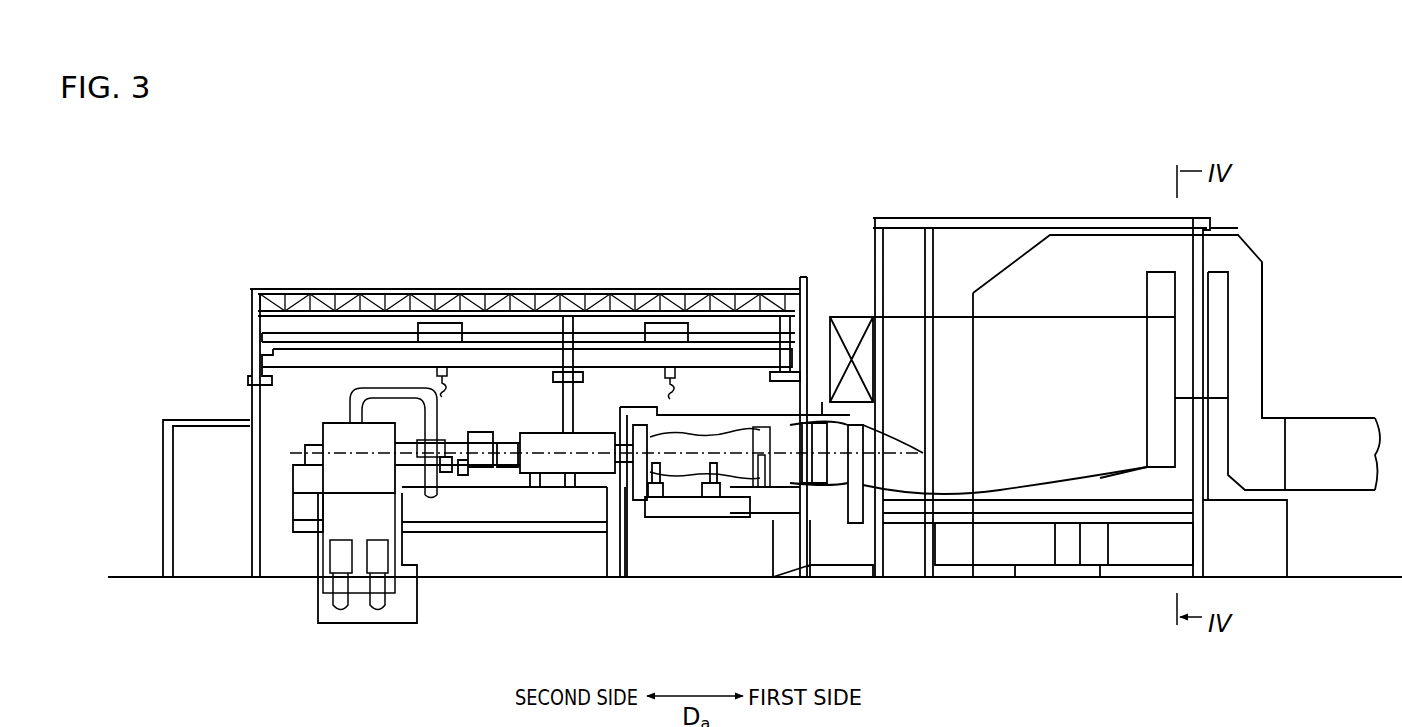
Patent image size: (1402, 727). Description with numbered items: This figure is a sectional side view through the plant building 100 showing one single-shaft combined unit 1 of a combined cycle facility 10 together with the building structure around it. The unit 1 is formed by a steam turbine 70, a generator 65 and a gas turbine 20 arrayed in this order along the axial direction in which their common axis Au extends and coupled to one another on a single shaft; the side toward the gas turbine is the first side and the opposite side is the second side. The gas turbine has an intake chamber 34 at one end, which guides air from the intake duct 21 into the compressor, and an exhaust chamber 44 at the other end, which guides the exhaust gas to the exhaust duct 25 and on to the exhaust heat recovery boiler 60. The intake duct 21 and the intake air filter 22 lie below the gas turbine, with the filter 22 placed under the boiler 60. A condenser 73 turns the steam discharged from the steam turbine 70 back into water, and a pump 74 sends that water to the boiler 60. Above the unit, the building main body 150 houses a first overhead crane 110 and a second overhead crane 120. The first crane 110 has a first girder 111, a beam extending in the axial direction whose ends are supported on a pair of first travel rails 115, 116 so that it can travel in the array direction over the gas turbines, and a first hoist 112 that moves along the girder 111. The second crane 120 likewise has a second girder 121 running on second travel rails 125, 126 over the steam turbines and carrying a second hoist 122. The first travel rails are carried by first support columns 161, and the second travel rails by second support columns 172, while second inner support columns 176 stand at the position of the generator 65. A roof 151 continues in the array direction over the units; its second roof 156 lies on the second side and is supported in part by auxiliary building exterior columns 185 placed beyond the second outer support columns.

The single-shaft combined unit 1 is at (290, 445).
The combined cycle facility 10 is at (1255, 224).
The gas turbine facility 20 is at (685, 486).
The intake duct 21 is at (978, 556).
The intake air filter 22 is at (1088, 558).
The exhaust duct 25 is at (858, 482).
The intake chamber 34 is at (636, 478).
The exhaust chamber 44 is at (748, 462).
The exhaust heat recovery boiler 60 is at (1003, 266).
The generator 65 is at (543, 478).
The steam turbine 70 is at (320, 480).
The condenser 73 is at (333, 530).
The pump 74 is at (338, 630).
The plant building 100 is at (230, 216).
The first overhead crane 110 is at (748, 328).
The first girder 111 is at (704, 355).
The first hoist 112 is at (662, 323).
The first travel rail 115 is at (783, 365).
The first travel rail 116 is at (575, 340).
The second overhead crane 120 is at (323, 318).
The second girder 121 is at (383, 356).
The second hoist 122 is at (434, 323).
The second travel rail 125 is at (248, 388).
The second travel rail 126 is at (550, 377).
The building main body 150 is at (240, 291).
The roof 151 is at (343, 290).
The second roof 156 is at (192, 418).
The first support column 161 is at (824, 312).
The second support column 172 is at (258, 332).
The second inner support column 176 is at (549, 335).
The auxiliary building exterior column 185 is at (168, 510).
The axis Au is at (901, 453).